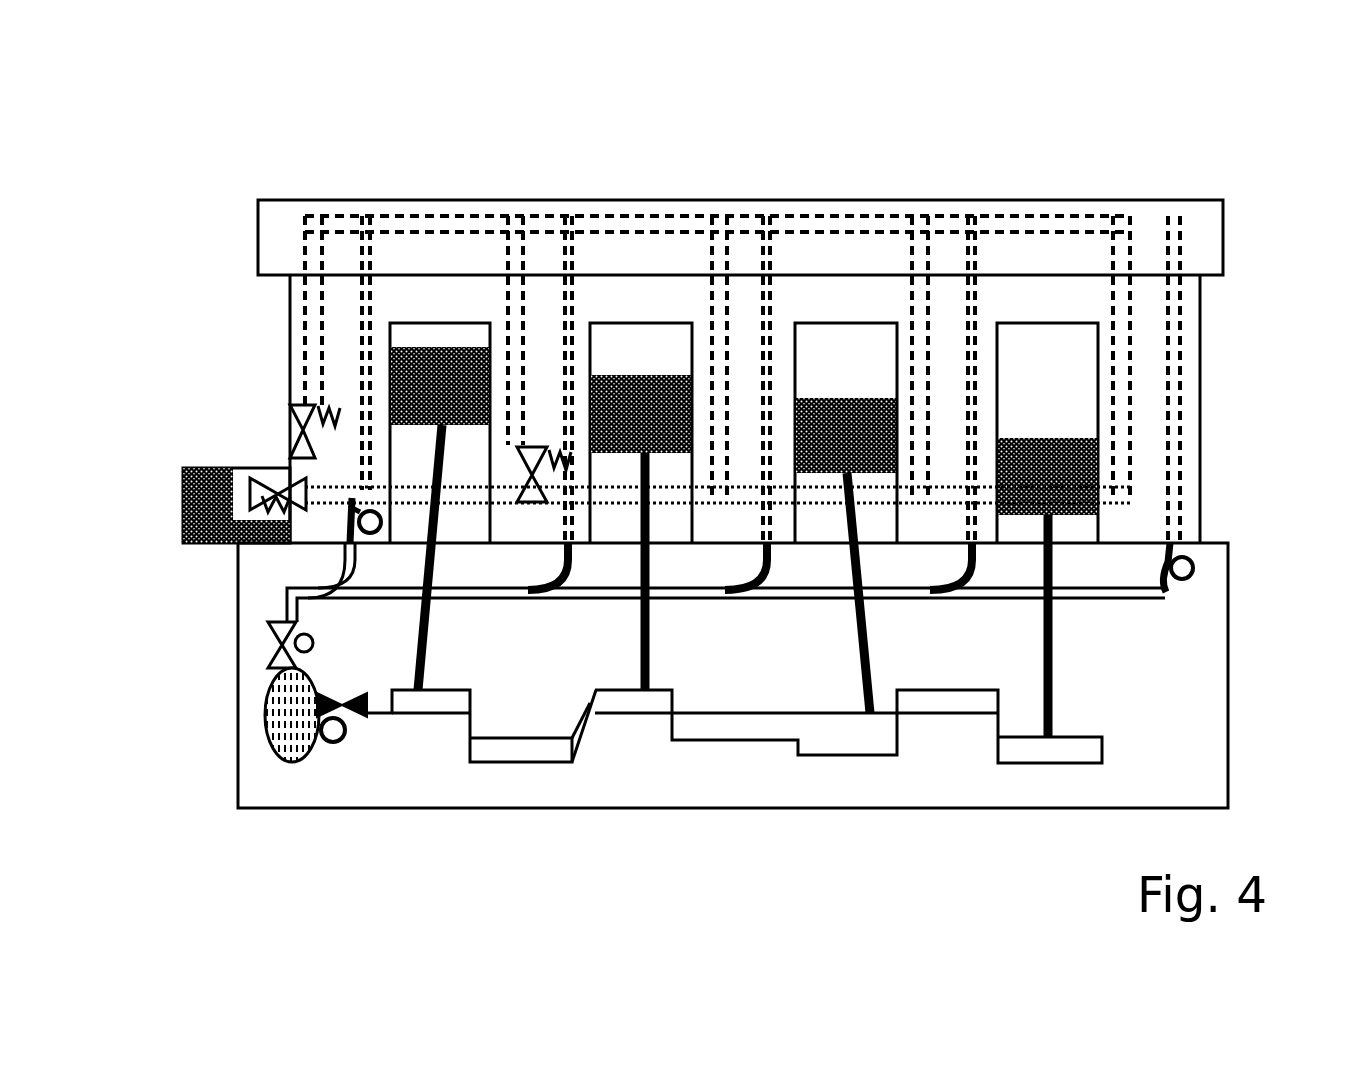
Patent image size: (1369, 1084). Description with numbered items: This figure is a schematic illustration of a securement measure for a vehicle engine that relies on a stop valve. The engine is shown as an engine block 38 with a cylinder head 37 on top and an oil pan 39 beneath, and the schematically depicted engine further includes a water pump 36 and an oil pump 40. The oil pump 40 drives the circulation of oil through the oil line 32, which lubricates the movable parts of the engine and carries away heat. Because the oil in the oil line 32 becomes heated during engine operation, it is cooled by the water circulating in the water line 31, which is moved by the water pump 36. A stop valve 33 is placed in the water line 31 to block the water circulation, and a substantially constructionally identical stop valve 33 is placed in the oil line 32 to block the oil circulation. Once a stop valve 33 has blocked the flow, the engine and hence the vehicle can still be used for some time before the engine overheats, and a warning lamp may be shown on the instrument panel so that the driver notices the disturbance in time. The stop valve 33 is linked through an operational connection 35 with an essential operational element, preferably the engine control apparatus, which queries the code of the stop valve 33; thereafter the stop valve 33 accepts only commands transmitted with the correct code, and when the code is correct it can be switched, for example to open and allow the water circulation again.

The water line 31 is at (818, 233).
The oil line 32 is at (364, 325).
The stop valve 33 is at (290, 427).
The operational connection 35 is at (343, 567).
The water pump 36 is at (183, 497).
The cylinder head 37 is at (1225, 250).
The engine block 38 is at (1200, 447).
The oil pan 39 is at (1228, 712).
The oil pump 40 is at (263, 720).